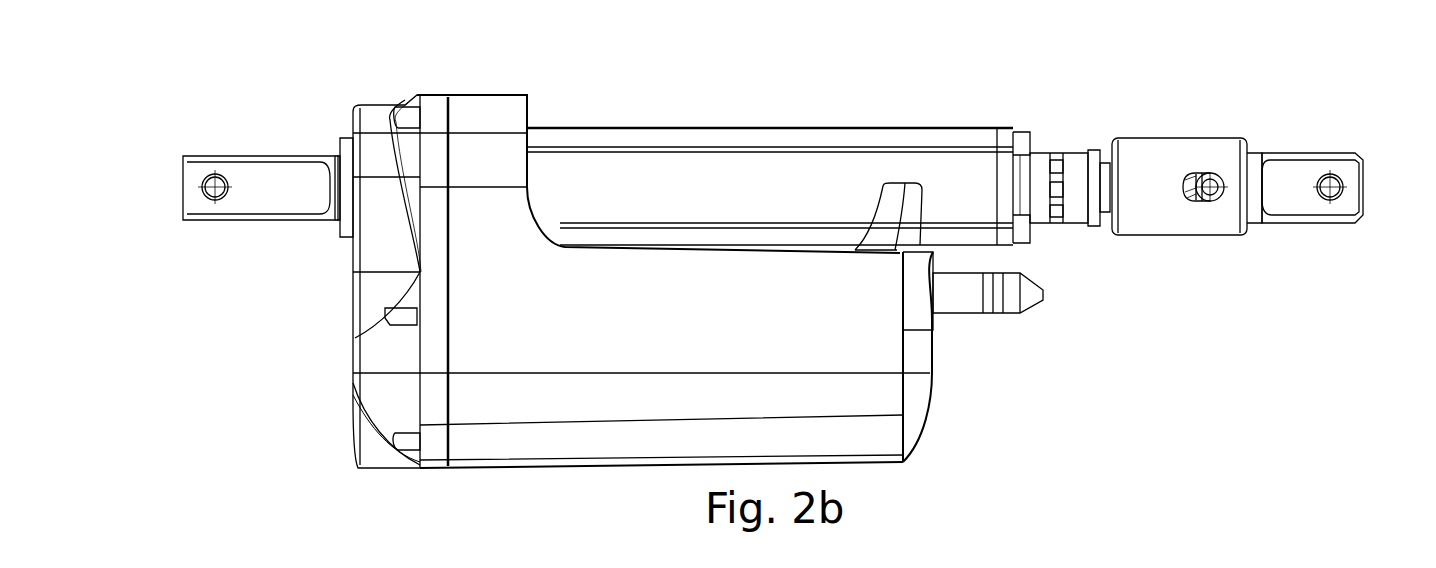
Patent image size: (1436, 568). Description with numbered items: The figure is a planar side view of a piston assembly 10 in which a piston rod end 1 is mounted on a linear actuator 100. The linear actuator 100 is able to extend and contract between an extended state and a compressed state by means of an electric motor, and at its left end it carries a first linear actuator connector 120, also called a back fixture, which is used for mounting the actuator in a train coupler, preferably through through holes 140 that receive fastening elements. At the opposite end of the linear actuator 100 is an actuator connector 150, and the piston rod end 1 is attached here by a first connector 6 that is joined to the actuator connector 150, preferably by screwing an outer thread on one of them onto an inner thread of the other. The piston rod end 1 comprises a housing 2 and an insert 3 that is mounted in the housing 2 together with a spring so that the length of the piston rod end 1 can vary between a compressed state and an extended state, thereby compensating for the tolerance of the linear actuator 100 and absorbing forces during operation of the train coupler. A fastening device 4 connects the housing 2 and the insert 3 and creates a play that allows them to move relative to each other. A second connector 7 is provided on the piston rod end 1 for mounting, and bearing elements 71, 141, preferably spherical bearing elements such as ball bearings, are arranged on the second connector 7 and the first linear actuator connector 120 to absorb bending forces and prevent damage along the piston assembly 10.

The piston rod end 1 is at (1245, 118).
The housing 2 is at (1185, 222).
The insert 3 is at (1263, 225).
The fastening device 4 is at (1216, 167).
The first connector 6 is at (1088, 226).
The second connector 7 is at (1312, 158).
The bearing element 71 is at (1345, 178).
The piston assembly 10 is at (1036, 378).
The linear actuator 100 is at (488, 84).
The first linear actuator connector 120 is at (290, 202).
The through holes 140 is at (212, 202).
The bearing element 141 is at (200, 186).
The actuator connector 150 is at (1070, 165).